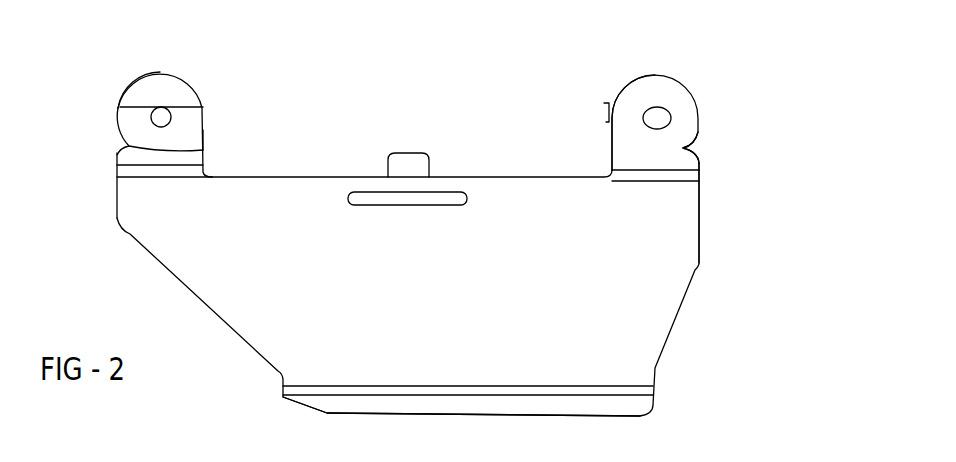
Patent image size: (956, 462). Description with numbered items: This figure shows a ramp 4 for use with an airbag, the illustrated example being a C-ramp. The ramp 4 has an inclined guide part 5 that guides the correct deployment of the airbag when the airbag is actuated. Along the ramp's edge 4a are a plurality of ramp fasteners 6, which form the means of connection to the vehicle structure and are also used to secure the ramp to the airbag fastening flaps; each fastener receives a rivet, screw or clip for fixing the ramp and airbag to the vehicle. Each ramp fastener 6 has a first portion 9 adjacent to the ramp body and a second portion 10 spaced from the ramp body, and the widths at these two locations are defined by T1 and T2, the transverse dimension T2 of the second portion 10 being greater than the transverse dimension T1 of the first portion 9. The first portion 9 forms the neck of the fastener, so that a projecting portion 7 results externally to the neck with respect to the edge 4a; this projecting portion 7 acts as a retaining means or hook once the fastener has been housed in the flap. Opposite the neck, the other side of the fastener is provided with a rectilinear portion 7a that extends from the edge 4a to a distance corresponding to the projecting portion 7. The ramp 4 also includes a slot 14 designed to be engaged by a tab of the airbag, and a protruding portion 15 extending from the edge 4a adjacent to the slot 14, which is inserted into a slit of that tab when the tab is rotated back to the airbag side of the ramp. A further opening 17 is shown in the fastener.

The ramp 4 is at (663, 284).
The ramp's edge 4a is at (257, 178).
The inclined guide part 5 is at (330, 400).
The ramp fastener 6 is at (632, 140).
The projecting portion 7 is at (702, 110).
The rectilinear portion 7a is at (205, 128).
The first portion 9 is at (694, 146).
The second portion 10 is at (606, 112).
The slot 14 is at (453, 186).
The protruding portion 15 is at (400, 161).
The hole 17 is at (657, 120).
The transverse dimension of the first portion T1 is at (180, 148).
The transverse dimension of the second portion T2 is at (142, 105).